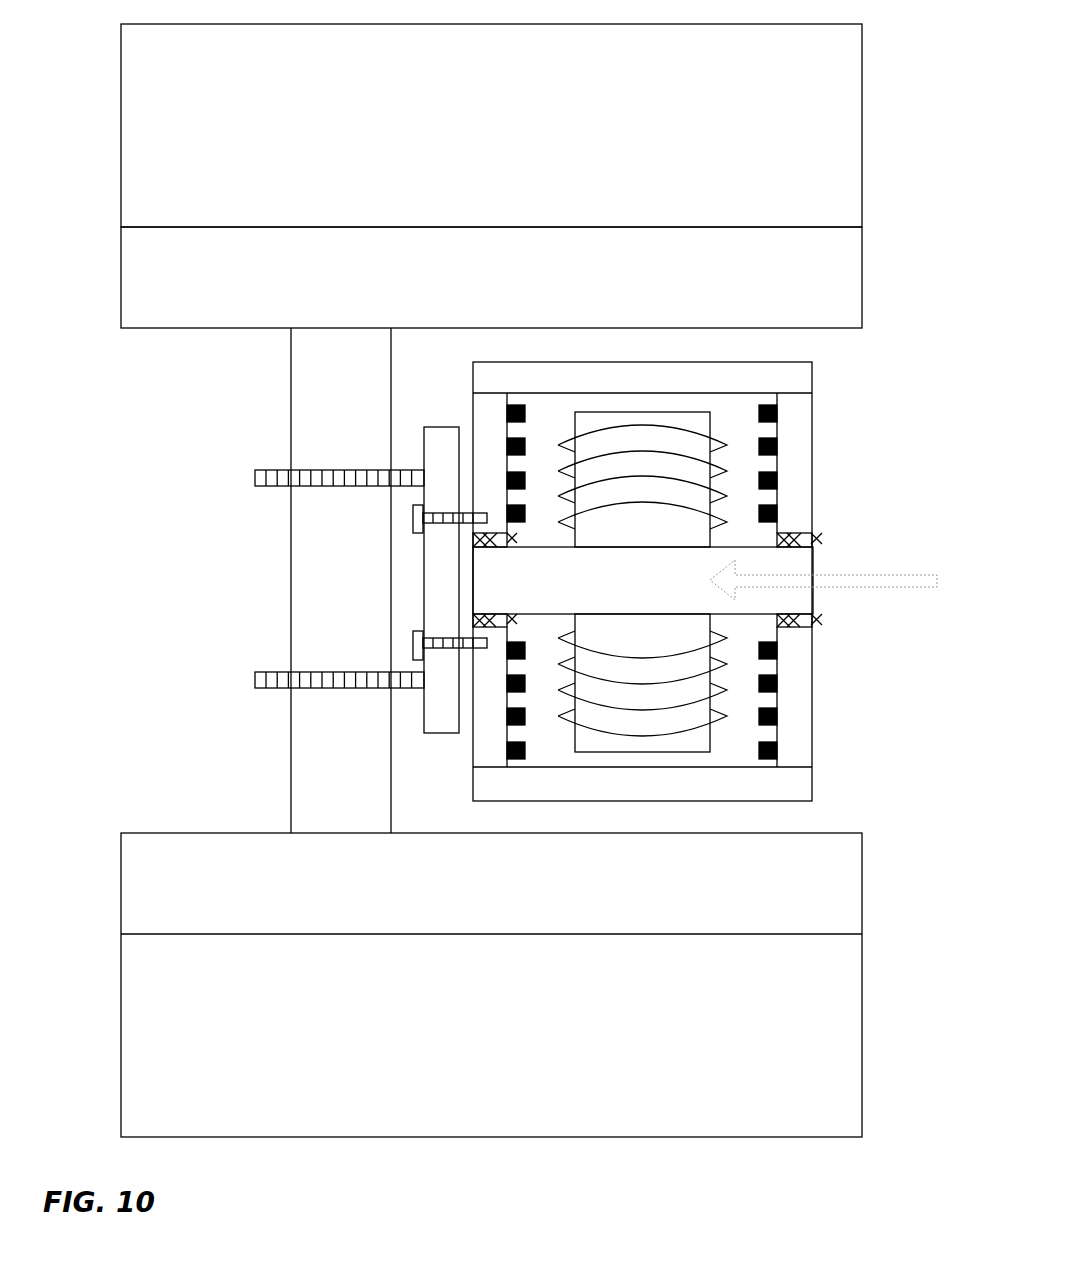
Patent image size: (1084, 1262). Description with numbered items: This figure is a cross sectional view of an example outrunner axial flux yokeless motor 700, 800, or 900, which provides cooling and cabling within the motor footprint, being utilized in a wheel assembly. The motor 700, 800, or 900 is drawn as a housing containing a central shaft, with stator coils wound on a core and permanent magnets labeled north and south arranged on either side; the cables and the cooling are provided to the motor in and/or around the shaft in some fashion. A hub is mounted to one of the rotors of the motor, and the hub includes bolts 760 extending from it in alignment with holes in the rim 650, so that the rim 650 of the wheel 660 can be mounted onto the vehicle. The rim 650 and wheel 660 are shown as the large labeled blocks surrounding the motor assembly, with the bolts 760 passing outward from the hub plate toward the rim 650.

The wheel 660 is at (121, 128).
The rim 650 is at (121, 280).
The bolts 760 is at (255, 478).
The outrunner axial flux yokeless motor 700 is at (722, 581).
The outrunner axial flux yokeless motor 800 is at (722, 581).
The outrunner axial flux yokeless motor 900 is at (842, 470).